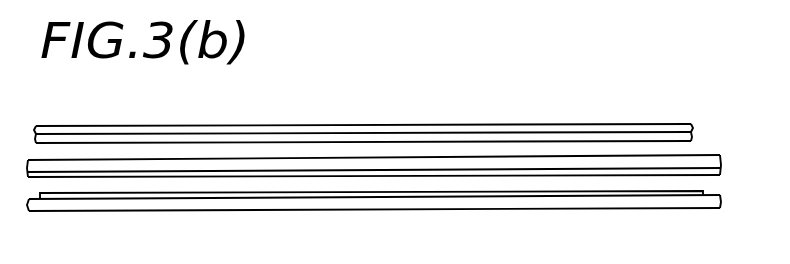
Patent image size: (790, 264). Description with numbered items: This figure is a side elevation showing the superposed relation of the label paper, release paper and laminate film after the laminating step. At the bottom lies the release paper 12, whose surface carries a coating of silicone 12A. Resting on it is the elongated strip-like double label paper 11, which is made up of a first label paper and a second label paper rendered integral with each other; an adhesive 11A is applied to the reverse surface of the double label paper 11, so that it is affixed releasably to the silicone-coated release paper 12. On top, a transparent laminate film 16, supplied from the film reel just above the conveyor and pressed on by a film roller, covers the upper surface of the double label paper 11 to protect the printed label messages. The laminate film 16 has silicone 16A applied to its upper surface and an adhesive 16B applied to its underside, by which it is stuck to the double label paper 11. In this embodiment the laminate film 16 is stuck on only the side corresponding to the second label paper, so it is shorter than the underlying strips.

The double label paper 11 is at (374, 122).
The adhesive 11A is at (383, 172).
The release paper 12 is at (374, 162).
The silicone 12A is at (327, 193).
The laminate film 16 is at (363, 105).
The silicone 16A is at (662, 123).
The adhesive 16B is at (582, 140).